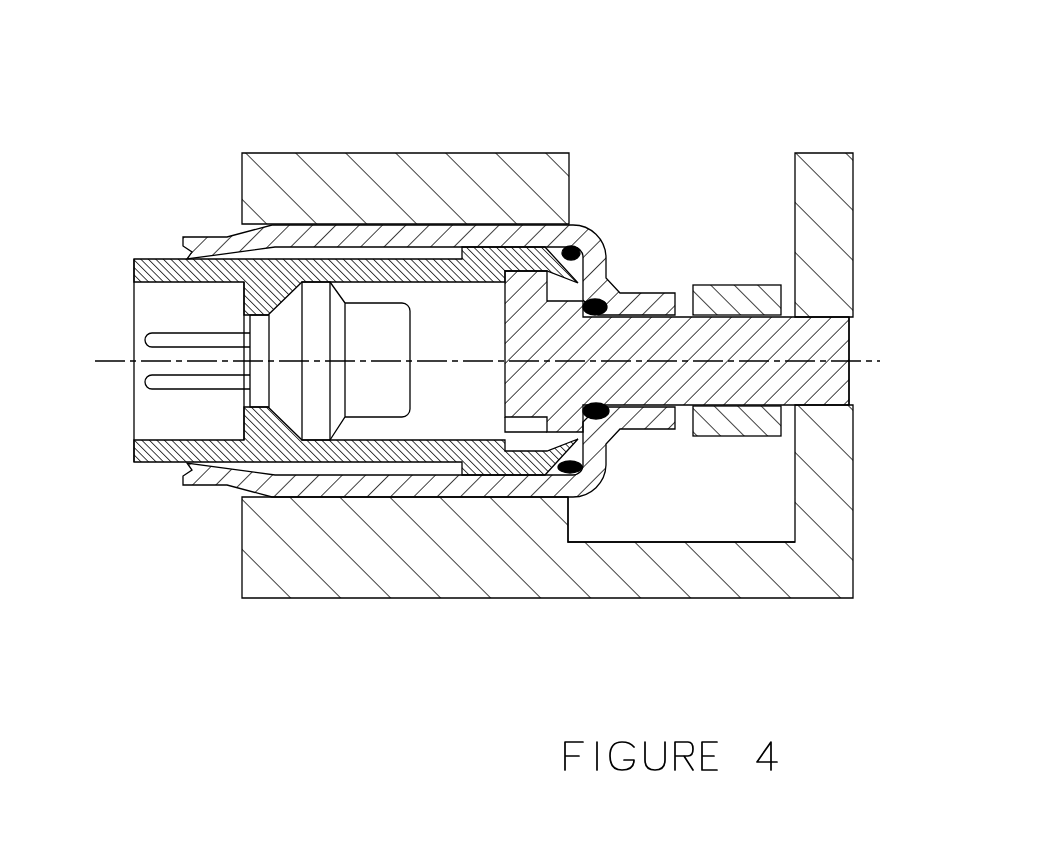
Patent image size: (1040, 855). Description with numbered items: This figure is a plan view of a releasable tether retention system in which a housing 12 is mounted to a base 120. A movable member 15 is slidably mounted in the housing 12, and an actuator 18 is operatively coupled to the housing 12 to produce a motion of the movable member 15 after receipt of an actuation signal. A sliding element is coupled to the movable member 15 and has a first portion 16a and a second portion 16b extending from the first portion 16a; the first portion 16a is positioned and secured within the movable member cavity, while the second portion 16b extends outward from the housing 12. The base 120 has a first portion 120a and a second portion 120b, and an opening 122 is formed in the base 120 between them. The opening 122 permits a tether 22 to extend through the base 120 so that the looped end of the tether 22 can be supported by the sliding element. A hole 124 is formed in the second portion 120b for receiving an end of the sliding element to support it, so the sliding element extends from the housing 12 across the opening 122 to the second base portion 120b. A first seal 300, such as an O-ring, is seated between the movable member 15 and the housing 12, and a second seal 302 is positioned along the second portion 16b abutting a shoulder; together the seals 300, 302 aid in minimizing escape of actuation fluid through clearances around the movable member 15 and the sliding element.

The housing 12 is at (222, 236).
The movable member 15 is at (152, 462).
The first portion 16a is at (520, 336).
The second portion 16b is at (817, 343).
The actuator 18 is at (150, 333).
The tether 22 is at (738, 295).
The base 120 is at (336, 580).
The first portion 120a is at (527, 157).
The second portion 120b is at (824, 170).
The opening 122 is at (718, 501).
The hole 124 is at (852, 385).
The first seal 300 is at (578, 246).
The second seal 302 is at (598, 298).